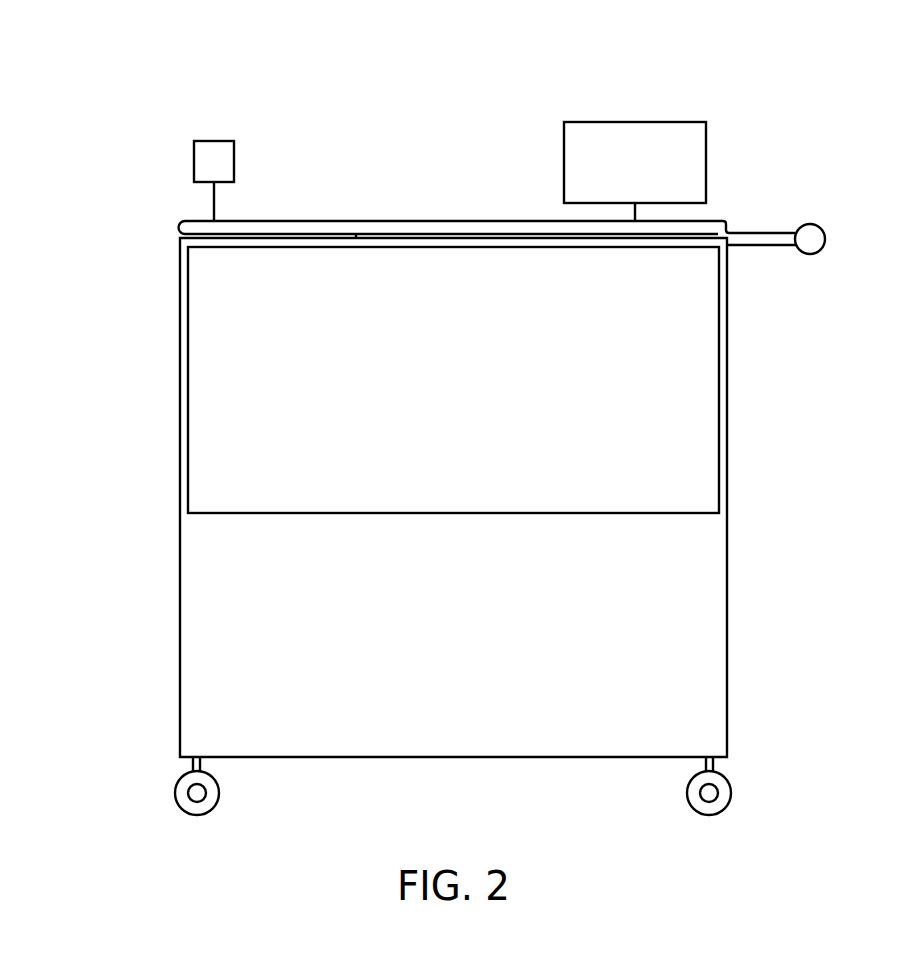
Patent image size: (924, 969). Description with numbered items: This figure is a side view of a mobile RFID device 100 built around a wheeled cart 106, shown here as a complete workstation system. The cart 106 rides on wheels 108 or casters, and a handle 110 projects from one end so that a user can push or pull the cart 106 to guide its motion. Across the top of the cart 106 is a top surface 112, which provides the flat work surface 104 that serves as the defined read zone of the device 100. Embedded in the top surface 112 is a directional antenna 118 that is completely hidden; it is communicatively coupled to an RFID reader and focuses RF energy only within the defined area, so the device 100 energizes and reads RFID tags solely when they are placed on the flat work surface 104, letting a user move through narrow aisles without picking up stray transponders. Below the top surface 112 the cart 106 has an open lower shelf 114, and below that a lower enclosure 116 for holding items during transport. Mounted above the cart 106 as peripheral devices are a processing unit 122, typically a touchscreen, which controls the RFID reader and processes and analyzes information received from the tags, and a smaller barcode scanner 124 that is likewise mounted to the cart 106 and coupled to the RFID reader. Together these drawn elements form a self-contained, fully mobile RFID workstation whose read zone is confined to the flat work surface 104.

The mobile RFID device 100 is at (804, 116).
The flat work surface 104 is at (262, 220).
The cart 106 is at (727, 387).
The wheels 108 is at (175, 794).
The handle 110 is at (777, 232).
The top surface 112 is at (720, 219).
The open lower shelf 114 is at (264, 513).
The lower enclosure 116 is at (180, 623).
The directional antenna 118 is at (443, 234).
The processing unit 122 is at (633, 122).
The barcode scanner 124 is at (215, 141).